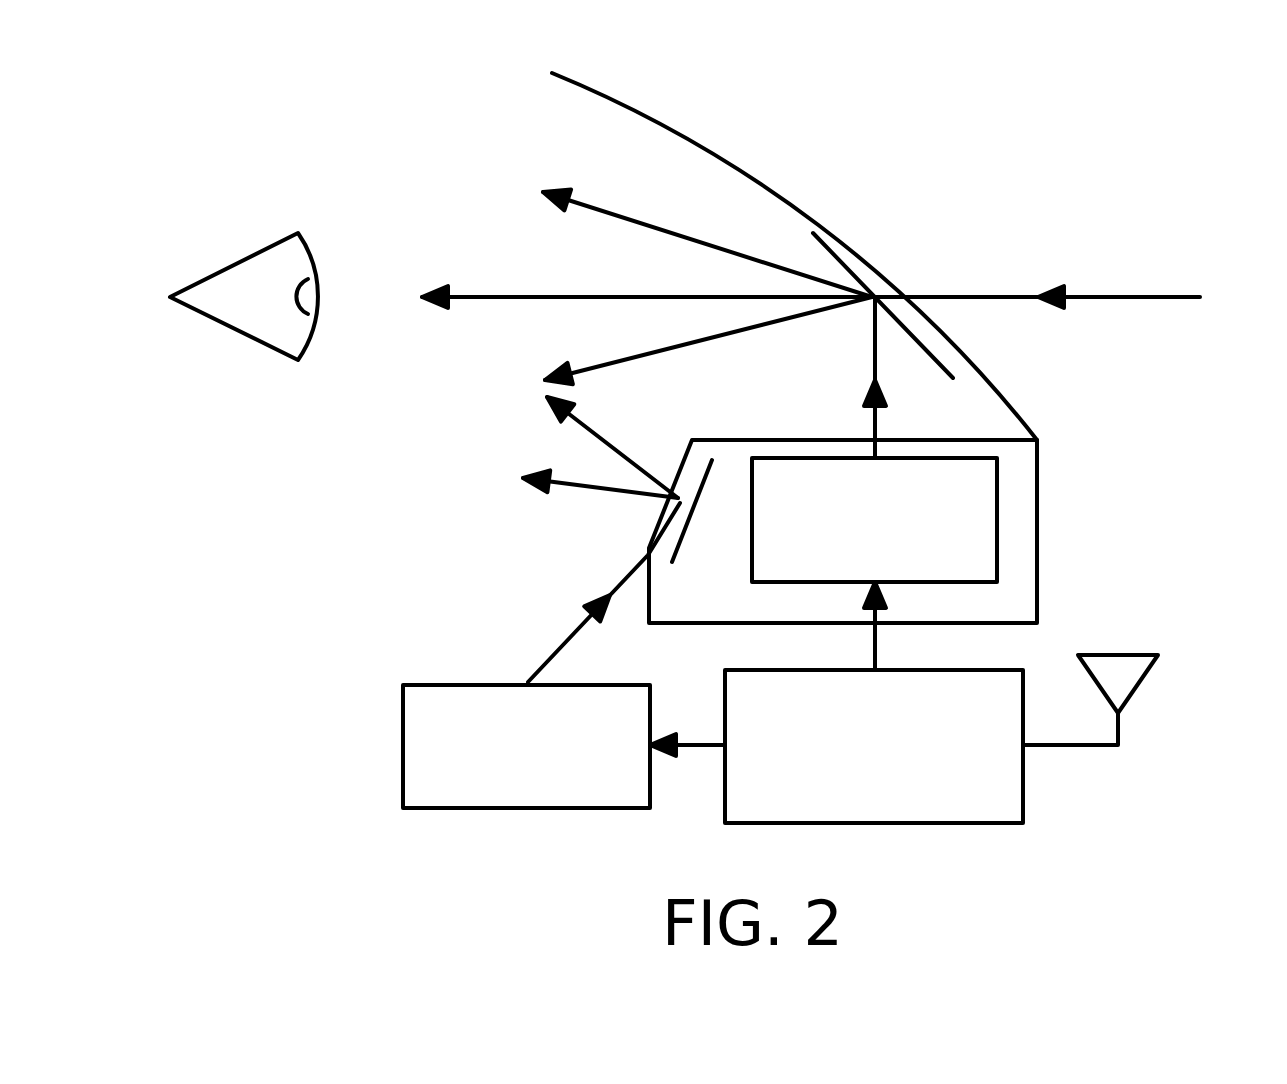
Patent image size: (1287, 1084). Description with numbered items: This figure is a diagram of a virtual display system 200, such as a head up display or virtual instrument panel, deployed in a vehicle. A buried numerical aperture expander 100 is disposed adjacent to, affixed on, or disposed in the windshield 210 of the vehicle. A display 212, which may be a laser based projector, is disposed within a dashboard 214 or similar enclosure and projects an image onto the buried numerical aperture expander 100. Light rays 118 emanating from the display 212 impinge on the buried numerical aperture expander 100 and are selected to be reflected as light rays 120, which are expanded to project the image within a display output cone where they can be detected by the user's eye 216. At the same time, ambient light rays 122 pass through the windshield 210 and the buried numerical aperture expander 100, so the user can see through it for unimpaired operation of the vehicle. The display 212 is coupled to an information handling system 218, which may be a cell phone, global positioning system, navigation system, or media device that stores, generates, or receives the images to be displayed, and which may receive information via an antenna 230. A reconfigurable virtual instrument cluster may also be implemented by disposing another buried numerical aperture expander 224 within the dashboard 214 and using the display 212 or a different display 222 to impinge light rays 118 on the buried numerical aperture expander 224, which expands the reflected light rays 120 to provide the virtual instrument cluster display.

The buried numerical aperture expander 100 is at (852, 258).
The light rays 118 is at (870, 418).
The light rays 120 is at (607, 213).
The ambient light rays 122 is at (508, 295).
The virtual display system 200 is at (1013, 137).
The windshield 210 is at (690, 138).
The display 212 is at (998, 490).
The dashboard 214 is at (1040, 537).
The eye 216 is at (285, 230).
The information handling system 218 is at (1023, 783).
The display 222 is at (400, 715).
The buried numerical aperture expander 224 is at (683, 542).
The antenna 230 is at (1137, 655).